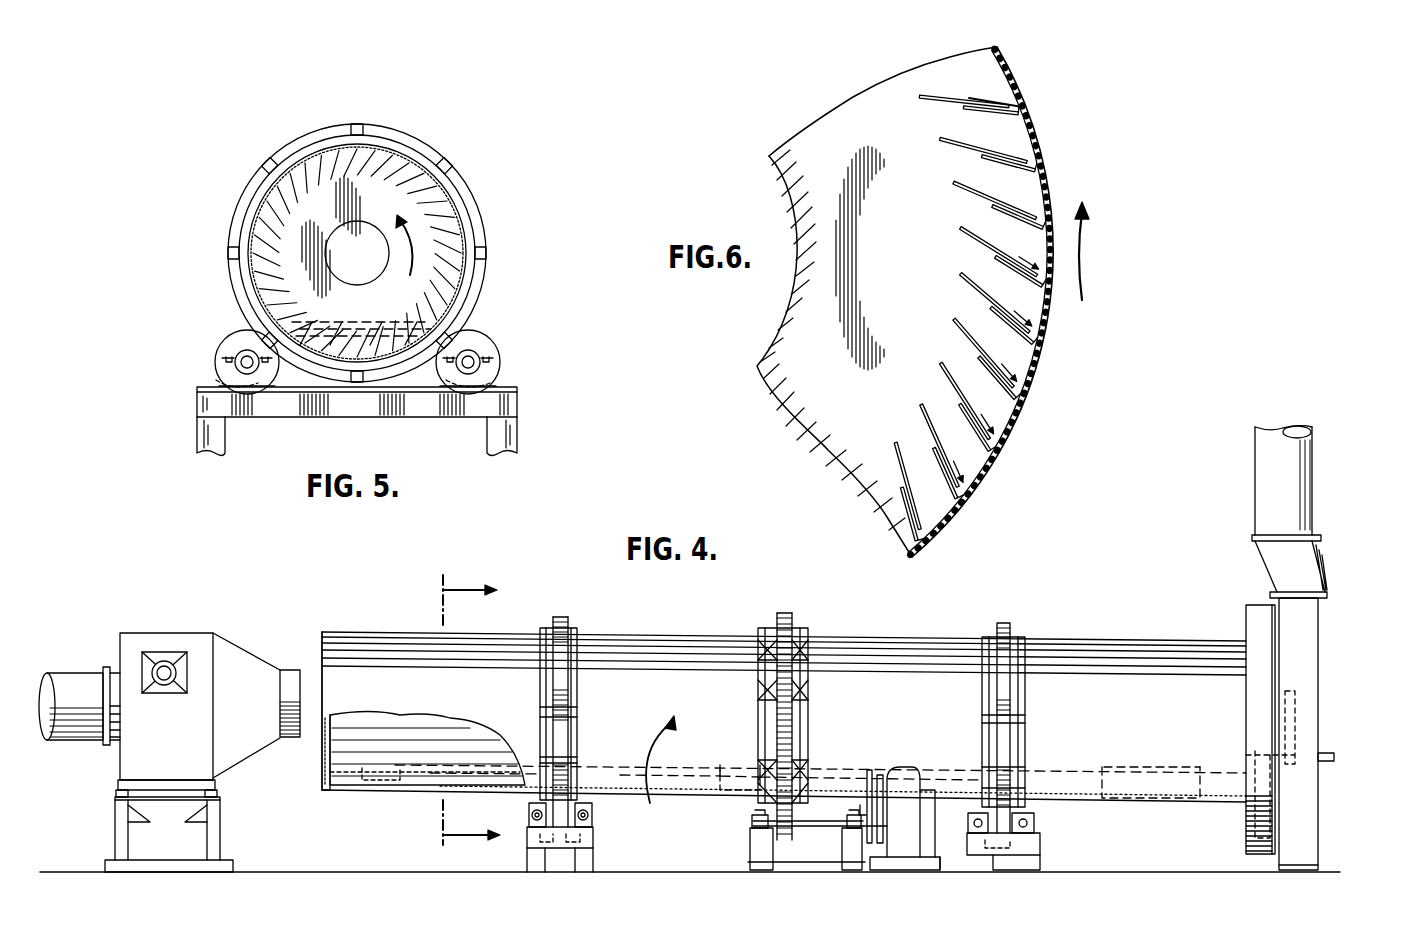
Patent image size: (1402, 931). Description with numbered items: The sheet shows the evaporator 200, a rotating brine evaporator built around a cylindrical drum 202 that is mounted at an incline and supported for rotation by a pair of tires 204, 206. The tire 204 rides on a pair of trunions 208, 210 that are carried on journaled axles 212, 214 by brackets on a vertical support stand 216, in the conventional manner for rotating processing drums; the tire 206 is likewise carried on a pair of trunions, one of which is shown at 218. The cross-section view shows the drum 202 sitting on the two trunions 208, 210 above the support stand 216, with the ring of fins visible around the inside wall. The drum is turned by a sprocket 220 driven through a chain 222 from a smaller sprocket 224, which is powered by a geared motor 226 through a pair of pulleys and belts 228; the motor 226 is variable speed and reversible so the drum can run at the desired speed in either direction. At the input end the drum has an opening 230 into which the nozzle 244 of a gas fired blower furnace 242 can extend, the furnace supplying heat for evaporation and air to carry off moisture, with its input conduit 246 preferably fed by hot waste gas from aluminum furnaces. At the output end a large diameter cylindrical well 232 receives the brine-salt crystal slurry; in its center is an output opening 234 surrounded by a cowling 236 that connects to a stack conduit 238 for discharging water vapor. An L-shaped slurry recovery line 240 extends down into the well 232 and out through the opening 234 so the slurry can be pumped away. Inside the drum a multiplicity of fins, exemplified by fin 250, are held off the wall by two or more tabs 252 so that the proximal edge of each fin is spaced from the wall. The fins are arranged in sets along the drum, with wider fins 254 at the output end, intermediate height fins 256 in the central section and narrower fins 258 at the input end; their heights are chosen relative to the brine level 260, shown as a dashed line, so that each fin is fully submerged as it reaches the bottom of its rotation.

In FIG. 4, the evaporator 200 is at (714, 649).
In FIG. 4, the cylindrical drum 202 is at (880, 640).
In FIG. 4, the tire 204 is at (560, 628).
In FIG. 4, the tire 206 is at (1008, 630).
In FIG. 5, the trunion 208 is at (237, 341).
In FIG. 5, the trunion 210 is at (497, 348).
In FIG. 4, the trunion 210 is at (557, 804).
In FIG. 5, the journaled axle 212 is at (243, 362).
In FIG. 5, the journaled axle 214 is at (497, 362).
In FIG. 4, the journaled axle 214 is at (592, 810).
In FIG. 5, the vertical support stand 216 is at (338, 418).
In FIG. 4, the trunion 218 is at (1015, 808).
In FIG. 4, the sprocket 220 is at (795, 618).
In FIG. 4, the chain 222 is at (765, 806).
In FIG. 4, the smaller sprocket 224 is at (785, 835).
In FIG. 4, the geared motor 226 is at (903, 767).
In FIG. 4, the pulleys and belts 228 is at (866, 778).
In FIG. 4, the opening 230 is at (322, 720).
In FIG. 4, the well 232 is at (1246, 627).
In FIG. 5, the output opening 234 is at (383, 262).
In FIG. 4, the output opening 234 is at (1290, 710).
In FIG. 4, the cowling 236 is at (1318, 652).
In FIG. 4, the stack conduit 238 is at (1255, 488).
In FIG. 4, the slurry recovery line 240 is at (1334, 757).
In FIG. 4, the gas fired blower furnace 242 is at (178, 633).
In FIG. 4, the nozzle 244 is at (296, 670).
In FIG. 4, the input conduit 246 is at (82, 673).
In FIG. 6, the fin 250 is at (968, 93).
In FIG. 6, the tab 252 is at (990, 105).
In FIG. 4, the wider fins 254 is at (1159, 767).
In FIG. 4, the intermediate height fins 256 is at (747, 763).
In FIG. 4, the narrower fins 258 is at (372, 778).
In FIG. 4, the brine level 260 is at (1108, 767).